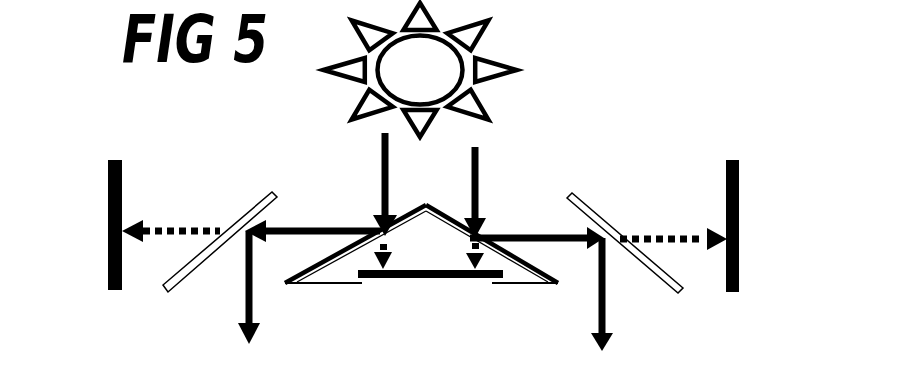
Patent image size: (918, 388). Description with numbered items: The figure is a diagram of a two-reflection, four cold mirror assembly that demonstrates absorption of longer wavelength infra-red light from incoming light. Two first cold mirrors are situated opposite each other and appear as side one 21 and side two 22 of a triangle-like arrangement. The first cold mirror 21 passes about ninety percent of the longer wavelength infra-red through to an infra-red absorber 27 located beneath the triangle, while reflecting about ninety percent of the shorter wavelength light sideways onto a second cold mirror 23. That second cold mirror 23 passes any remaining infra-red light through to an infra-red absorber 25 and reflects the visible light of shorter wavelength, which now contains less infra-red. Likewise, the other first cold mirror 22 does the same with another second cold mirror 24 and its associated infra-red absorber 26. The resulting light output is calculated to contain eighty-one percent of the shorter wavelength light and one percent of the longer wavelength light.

The first cold mirror (side one) 21 is at (345, 248).
The first cold mirror (side two) 22 is at (513, 260).
The second cold mirror 23 is at (250, 210).
The second cold mirror 24 is at (592, 220).
The infra-red absorber 25 is at (108, 188).
The infra-red absorber 26 is at (740, 190).
The infra-red absorber 27 is at (433, 278).